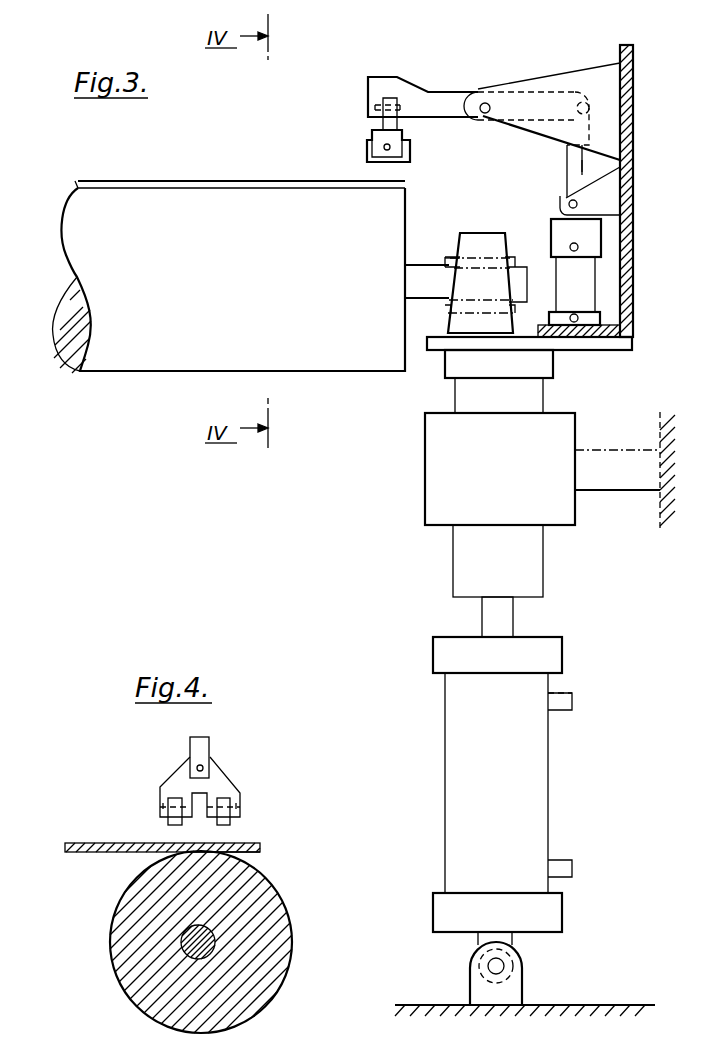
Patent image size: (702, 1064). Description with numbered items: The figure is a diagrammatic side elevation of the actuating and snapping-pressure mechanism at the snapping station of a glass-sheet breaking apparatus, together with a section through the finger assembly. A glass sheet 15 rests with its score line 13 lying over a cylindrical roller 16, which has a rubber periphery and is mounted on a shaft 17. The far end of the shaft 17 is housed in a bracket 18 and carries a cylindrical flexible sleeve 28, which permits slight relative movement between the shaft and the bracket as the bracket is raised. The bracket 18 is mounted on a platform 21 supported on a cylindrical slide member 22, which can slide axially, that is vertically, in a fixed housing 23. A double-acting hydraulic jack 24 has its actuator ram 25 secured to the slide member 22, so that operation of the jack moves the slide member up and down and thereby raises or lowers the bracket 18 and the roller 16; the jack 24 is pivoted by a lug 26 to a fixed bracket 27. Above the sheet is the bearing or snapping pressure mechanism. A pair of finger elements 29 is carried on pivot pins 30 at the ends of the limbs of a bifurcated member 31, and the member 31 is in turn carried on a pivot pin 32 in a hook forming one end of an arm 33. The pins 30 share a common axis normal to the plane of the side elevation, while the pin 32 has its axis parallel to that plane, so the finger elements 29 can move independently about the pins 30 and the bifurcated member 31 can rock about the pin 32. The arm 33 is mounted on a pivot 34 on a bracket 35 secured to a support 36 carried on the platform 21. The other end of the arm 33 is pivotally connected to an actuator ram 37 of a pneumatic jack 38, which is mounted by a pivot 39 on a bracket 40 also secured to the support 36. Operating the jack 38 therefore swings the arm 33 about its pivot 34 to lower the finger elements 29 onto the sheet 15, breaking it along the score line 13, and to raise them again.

In FIG. 4, the score line 13 is at (195, 851).
In FIG. 3, the sheet 15 is at (157, 181).
In FIG. 4, the sheet 15 is at (108, 845).
In FIG. 3, the cylindrical roller 16 is at (186, 356).
In FIG. 4, the cylindrical roller 16 is at (270, 965).
In FIG. 3, the shaft 17 is at (433, 299).
In FIG. 3, the bracket 18 is at (463, 234).
In FIG. 3, the platform 21 is at (598, 351).
In FIG. 3, the cylindrical slide member 22 is at (536, 400).
In FIG. 3, the fixed housing 23 is at (425, 478).
In FIG. 3, the double-acting hydraulic jack 24 is at (450, 786).
In FIG. 3, the actuator ram 25 is at (513, 611).
In FIG. 3, the lug 26 is at (514, 940).
In FIG. 3, the fixed bracket 27 is at (470, 976).
In FIG. 3, the cylindrical flexible sleeve 28 is at (450, 263).
In FIG. 3, the finger elements 29 is at (367, 151).
In FIG. 4, the finger elements 29 is at (168, 823).
In FIG. 4, the pivot pins 30 is at (167, 800).
In FIG. 3, the bifurcated member 31 is at (398, 126).
In FIG. 4, the bifurcated member 31 is at (222, 776).
In FIG. 3, the pivot pin 32 is at (375, 105).
In FIG. 4, the pivot pin 32 is at (198, 766).
In FIG. 3, the arm 33 is at (432, 91).
In FIG. 4, the arm 33 is at (202, 740).
In FIG. 3, the pivot 34 is at (486, 114).
In FIG. 3, the bracket 35 is at (527, 84).
In FIG. 3, the support 36 is at (634, 117).
In FIG. 3, the actuator ram 37 is at (567, 180).
In FIG. 3, the pneumatic jack 38 is at (596, 281).
In FIG. 3, the pivot 39 is at (560, 204).
In FIG. 3, the bracket 40 is at (583, 164).